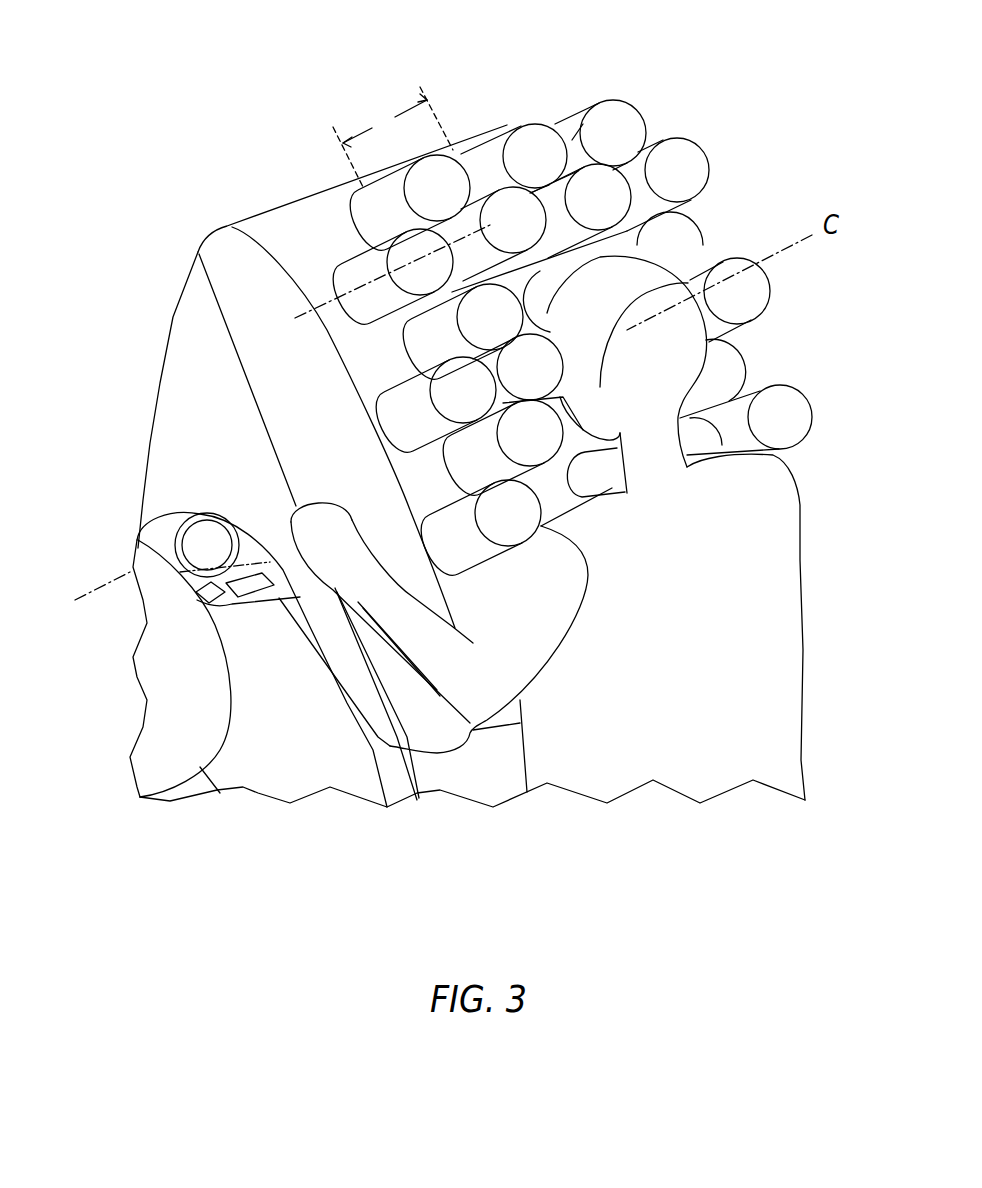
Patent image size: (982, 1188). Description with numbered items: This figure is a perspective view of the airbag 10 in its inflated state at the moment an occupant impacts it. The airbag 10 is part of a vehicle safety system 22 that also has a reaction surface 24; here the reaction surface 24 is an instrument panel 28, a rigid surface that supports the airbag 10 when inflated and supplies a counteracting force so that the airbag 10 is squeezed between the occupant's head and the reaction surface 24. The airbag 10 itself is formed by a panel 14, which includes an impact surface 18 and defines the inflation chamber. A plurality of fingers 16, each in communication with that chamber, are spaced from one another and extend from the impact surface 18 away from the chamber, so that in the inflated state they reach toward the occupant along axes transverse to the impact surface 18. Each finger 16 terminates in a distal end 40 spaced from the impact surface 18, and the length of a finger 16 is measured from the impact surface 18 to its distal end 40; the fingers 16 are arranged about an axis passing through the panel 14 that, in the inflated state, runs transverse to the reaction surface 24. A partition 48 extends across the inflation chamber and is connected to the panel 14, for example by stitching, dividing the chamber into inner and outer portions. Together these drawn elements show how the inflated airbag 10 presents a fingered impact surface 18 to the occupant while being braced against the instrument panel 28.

The airbag 10 is at (128, 230).
The panel 14 is at (177, 327).
The fingers 16 is at (556, 121).
The impact surface 18 is at (318, 245).
The vehicle safety system 22 is at (497, 68).
The reaction surface 24 is at (131, 548).
The instrument panel 28 is at (137, 530).
The distal end 40 is at (745, 350).
The partition 48 is at (240, 365).